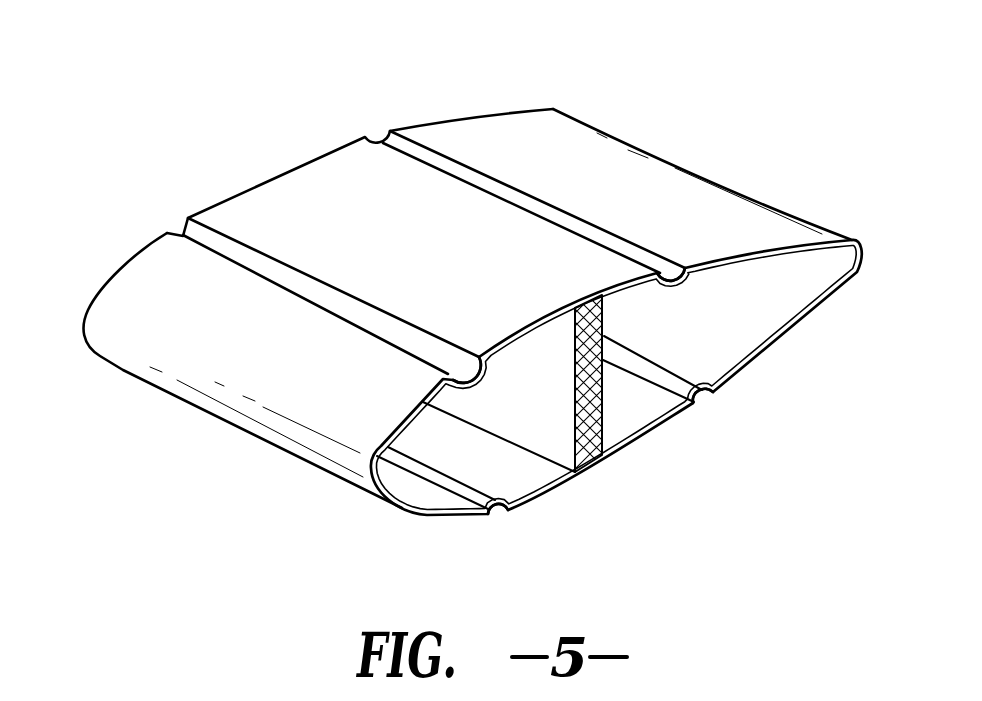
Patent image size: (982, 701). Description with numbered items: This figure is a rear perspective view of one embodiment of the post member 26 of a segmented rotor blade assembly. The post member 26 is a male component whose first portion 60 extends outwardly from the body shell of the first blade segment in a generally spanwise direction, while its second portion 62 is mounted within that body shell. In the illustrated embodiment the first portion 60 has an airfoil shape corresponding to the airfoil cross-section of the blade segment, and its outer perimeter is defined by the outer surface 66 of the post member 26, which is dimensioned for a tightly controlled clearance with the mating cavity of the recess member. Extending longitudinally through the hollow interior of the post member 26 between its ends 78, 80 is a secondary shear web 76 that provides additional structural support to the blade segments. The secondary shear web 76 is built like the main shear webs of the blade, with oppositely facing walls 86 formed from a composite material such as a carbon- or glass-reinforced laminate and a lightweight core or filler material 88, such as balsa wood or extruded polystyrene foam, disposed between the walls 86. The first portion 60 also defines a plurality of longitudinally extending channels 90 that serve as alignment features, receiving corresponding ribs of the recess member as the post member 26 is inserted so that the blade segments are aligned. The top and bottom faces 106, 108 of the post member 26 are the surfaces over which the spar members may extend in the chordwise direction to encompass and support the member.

The post member 26 is at (201, 86).
The first portion 60 is at (507, 137).
The second portion 62 is at (730, 213).
The outer surface 66 is at (232, 404).
The secondary shear web 76 is at (614, 405).
The end of the post member 78 is at (327, 148).
The end of the post member 80 is at (811, 324).
The oppositely facing walls 86 is at (604, 330).
The core or filler material 88 is at (607, 450).
The longitudinally extending channels 90 is at (183, 228).
The top face 106 is at (291, 218).
The bottom face 108 is at (437, 518).